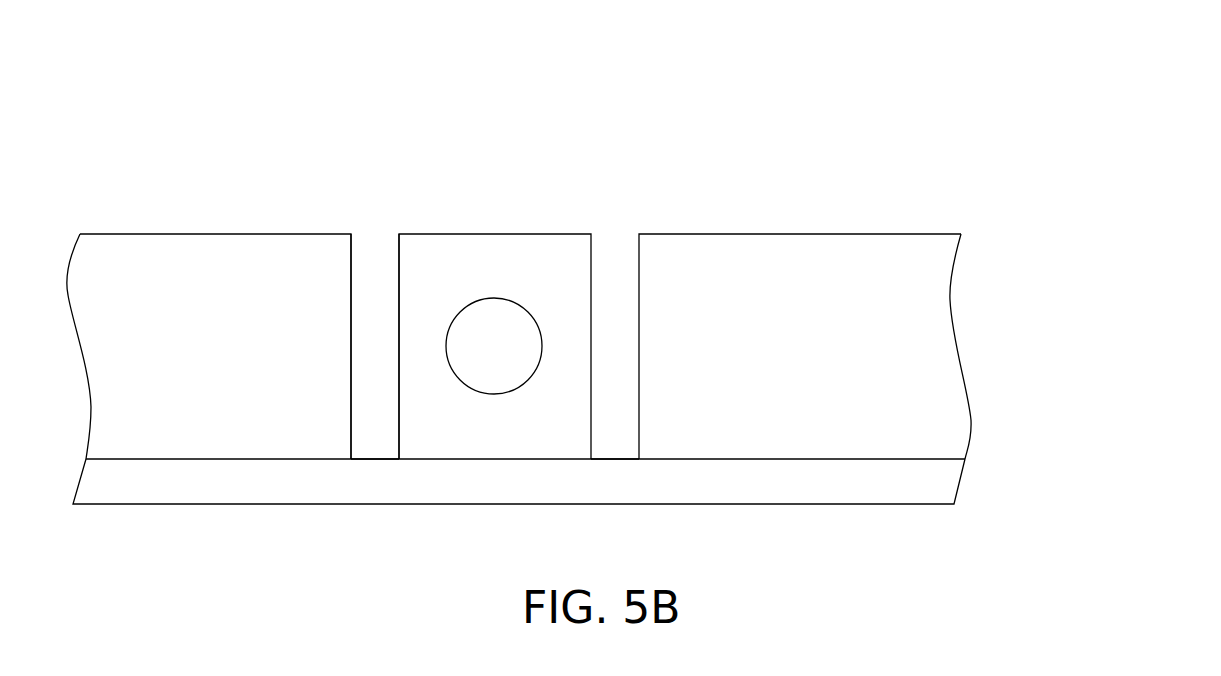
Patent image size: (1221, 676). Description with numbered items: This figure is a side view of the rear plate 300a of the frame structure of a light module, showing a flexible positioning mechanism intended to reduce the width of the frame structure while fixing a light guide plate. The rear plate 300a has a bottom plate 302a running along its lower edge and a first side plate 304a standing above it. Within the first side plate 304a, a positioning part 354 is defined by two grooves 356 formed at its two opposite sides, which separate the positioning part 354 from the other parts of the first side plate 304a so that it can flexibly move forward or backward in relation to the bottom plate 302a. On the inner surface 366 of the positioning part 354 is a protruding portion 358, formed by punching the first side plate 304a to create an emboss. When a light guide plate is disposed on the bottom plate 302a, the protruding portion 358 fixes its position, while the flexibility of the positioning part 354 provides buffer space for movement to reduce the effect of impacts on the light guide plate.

The rear plate 300a is at (636, 369).
The bottom plate 302a is at (587, 481).
The first side plate 304a is at (933, 338).
The positioning part 354 is at (445, 246).
The grooves 356 is at (372, 246).
The protruding portion 358 is at (494, 315).
The inner surface 366 is at (421, 250).